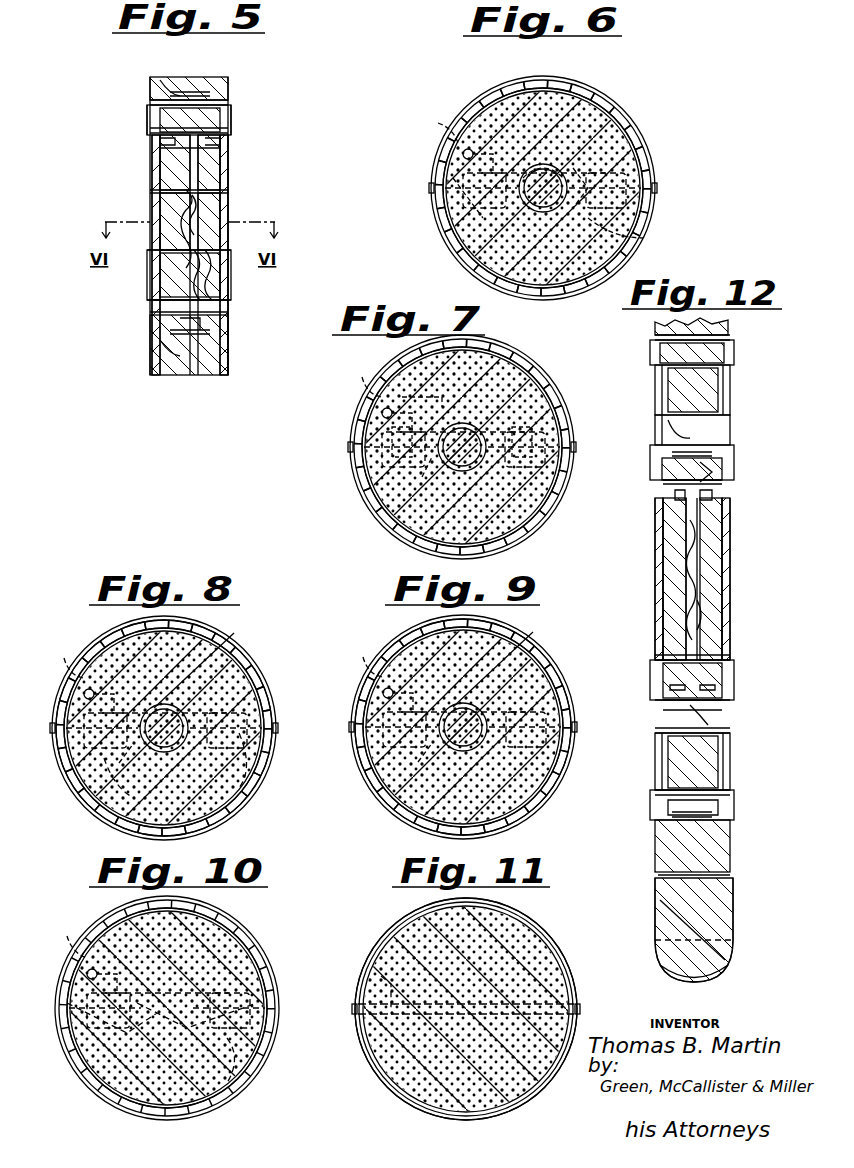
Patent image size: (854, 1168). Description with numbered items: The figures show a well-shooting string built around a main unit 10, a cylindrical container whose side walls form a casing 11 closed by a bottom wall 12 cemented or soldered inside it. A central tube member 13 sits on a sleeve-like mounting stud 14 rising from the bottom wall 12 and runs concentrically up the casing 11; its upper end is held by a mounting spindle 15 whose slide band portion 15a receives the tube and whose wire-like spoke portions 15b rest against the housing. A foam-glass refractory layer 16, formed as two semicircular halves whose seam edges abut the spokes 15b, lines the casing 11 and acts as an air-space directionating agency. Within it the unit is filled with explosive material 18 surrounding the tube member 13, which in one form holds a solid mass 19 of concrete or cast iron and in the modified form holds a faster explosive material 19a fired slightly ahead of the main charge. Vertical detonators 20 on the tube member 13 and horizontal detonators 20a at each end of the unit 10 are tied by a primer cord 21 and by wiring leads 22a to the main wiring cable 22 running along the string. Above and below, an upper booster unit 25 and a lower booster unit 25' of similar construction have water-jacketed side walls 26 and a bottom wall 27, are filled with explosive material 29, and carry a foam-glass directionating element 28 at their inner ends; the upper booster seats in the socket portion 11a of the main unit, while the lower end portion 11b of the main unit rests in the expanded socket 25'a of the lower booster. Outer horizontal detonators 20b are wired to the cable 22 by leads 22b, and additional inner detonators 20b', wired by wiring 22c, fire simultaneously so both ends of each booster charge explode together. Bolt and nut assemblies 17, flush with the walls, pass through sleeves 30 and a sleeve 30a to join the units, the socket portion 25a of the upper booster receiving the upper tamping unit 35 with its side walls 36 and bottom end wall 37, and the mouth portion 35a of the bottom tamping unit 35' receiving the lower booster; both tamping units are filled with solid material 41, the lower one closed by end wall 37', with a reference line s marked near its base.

In FIG. 5, the main unit 10 is at (228, 152).
In FIG. 6, the main unit 10 is at (543, 176).
In FIG. 8, the main unit 10 is at (159, 728).
In FIG. 9, the main unit 10 is at (447, 727).
In FIG. 12, the main unit 10 is at (730, 584).
In FIG. 8, the casing 11 is at (163, 732).
In FIG. 9, the casing 11 is at (481, 727).
In FIG. 5, the socket portion 11a is at (231, 112).
In FIG. 7, the socket portion 11a is at (471, 447).
In FIG. 5, the lower end portion 11b is at (152, 292).
In FIG. 5, the bottom wall 12 is at (160, 314).
In FIG. 12, the bottom wall 12 is at (668, 722).
In FIG. 5, the tube member 13 is at (190, 226).
In FIG. 6, the tube member 13 is at (563, 132).
In FIG. 7, the tube member 13 is at (494, 402).
In FIG. 8, the tube member 13 is at (194, 681).
In FIG. 9, the tube member 13 is at (492, 680).
In FIG. 12, the tube member 13 is at (698, 516).
In FIG. 5, the mounting stud 14 is at (236, 252).
In FIG. 12, the mounting stud 14 is at (715, 715).
In FIG. 5, the mounting spindle 15 is at (172, 148).
In FIG. 7, the slide band portion 15a is at (391, 372).
In FIG. 12, the slide band portion 15a is at (678, 505).
In FIG. 5, the spoke portions 15b is at (160, 132).
In FIG. 7, the spoke portions 15b is at (461, 425).
In FIG. 12, the spoke portions 15b is at (655, 420).
In FIG. 5, the refractory layer 16 is at (162, 180).
In FIG. 6, the refractory layer 16 is at (518, 188).
In FIG. 8, the refractory layer 16 is at (179, 728).
In FIG. 9, the refractory layer 16 is at (480, 727).
In FIG. 12, the refractory layer 16 is at (725, 542).
In FIG. 5, the bolt and nut assemblies 17 is at (231, 118).
In FIG. 6, the bolt and nut assemblies 17 is at (546, 175).
In FIG. 7, the bolt and nut assemblies 17 is at (456, 444).
In FIG. 8, the bolt and nut assemblies 17 is at (162, 725).
In FIG. 9, the bolt and nut assemblies 17 is at (460, 724).
In FIG. 11, the bolt and nut assemblies 17 is at (456, 1008).
In FIG. 12, the bolt and nut assemblies 17 is at (652, 345).
In FIG. 5, the explosive material 18 is at (185, 160).
In FIG. 6, the explosive material 18 is at (543, 168).
In FIG. 8, the explosive material 18 is at (142, 728).
In FIG. 9, the explosive material 18 is at (463, 718).
In FIG. 12, the explosive material 18 is at (710, 642).
In FIG. 7, the solid mass material 19 is at (451, 451).
In FIG. 8, the solid mass material 19 is at (212, 666).
In FIG. 9, the solid mass material 19 is at (514, 668).
In FIG. 5, the explosive material 19a is at (200, 198).
In FIG. 6, the explosive material 19a is at (593, 124).
In FIG. 8, the vertical detonators 20 is at (157, 755).
In FIG. 7, the horizontal detonators 20a is at (444, 435).
In FIG. 9, the horizontal detonators 20a is at (464, 746).
In FIG. 12, the horizontal detonators 20a is at (680, 512).
In FIG. 6, the horizontal detonators 20b is at (430, 199).
In FIG. 10, the horizontal detonators 20b is at (160, 1038).
In FIG. 12, the horizontal detonators 20b is at (653, 844).
In FIG. 5, the horizontal detonators 20b' is at (182, 197).
In FIG. 6, the horizontal detonators 20b' is at (542, 184).
In FIG. 12, the horizontal detonators 20b' is at (690, 440).
In FIG. 5, the primer cord 21 is at (200, 215).
In FIG. 6, the primer cord 21 is at (635, 203).
In FIG. 7, the primer cord 21 is at (372, 489).
In FIG. 8, the primer cord 21 is at (81, 780).
In FIG. 9, the primer cord 21 is at (384, 780).
In FIG. 12, the primer cord 21 is at (690, 588).
In FIG. 5, the wiring cable 22 is at (188, 200).
In FIG. 6, the wiring cable 22 is at (443, 143).
In FIG. 7, the wiring cable 22 is at (346, 409).
In FIG. 8, the wiring cable 22 is at (64, 707).
In FIG. 9, the wiring cable 22 is at (364, 700).
In FIG. 10, the wiring cable 22 is at (68, 984).
In FIG. 12, the wiring cable 22 is at (680, 555).
In FIG. 7, the wiring leads 22a is at (358, 385).
In FIG. 8, the wiring leads 22a is at (49, 682).
In FIG. 9, the wiring leads 22a is at (353, 663).
In FIG. 10, the wiring leads 22b is at (53, 946).
In FIG. 12, the wiring leads 22b is at (710, 805).
In FIG. 5, the wiring 22c is at (160, 70).
In FIG. 6, the wiring 22c is at (429, 106).
In FIG. 12, the wiring 22c is at (668, 438).
In FIG. 5, the upper booster unit 25 is at (211, 100).
In FIG. 7, the upper booster unit 25 is at (469, 447).
In FIG. 12, the upper booster unit 25 is at (712, 390).
In FIG. 5, the lower booster unit 25' is at (212, 345).
In FIG. 10, the lower booster unit 25' is at (167, 1008).
In FIG. 12, the lower booster unit 25' is at (721, 762).
In FIG. 11, the socket portion 25a is at (449, 1009).
In FIG. 5, the socket 25'a is at (222, 278).
In FIG. 6, the socket 25'a is at (571, 188).
In FIG. 8, the socket 25'a is at (179, 728).
In FIG. 9, the socket 25'a is at (482, 727).
In FIG. 7, the water-jacketed side walls 26 is at (474, 447).
In FIG. 10, the water-jacketed side walls 26 is at (152, 1009).
In FIG. 5, the bottom wall 27 is at (225, 120).
In FIG. 12, the bottom wall 27 is at (665, 478).
In FIG. 5, the directionating element 28 is at (220, 312).
In FIG. 12, the directionating element 28 is at (706, 470).
In FIG. 5, the explosive material 29 is at (172, 80).
In FIG. 10, the explosive material 29 is at (174, 1010).
In FIG. 12, the explosive material 29 is at (695, 385).
In FIG. 5, the sleeves 30 is at (228, 100).
In FIG. 12, the sleeves 30 is at (660, 775).
In FIG. 11, the sleeve 30a is at (348, 981).
In FIG. 12, the sleeve 30a is at (660, 328).
In FIG. 11, the upper tamping unit 35 is at (466, 1007).
In FIG. 12, the upper tamping unit 35 is at (713, 329).
In FIG. 12, the bottom tamping unit 35' is at (716, 930).
In FIG. 12, the mouth portion 35a is at (733, 845).
In FIG. 12, the side walls 36 is at (655, 918).
In FIG. 12, the bottom end wall 37 is at (716, 354).
In FIG. 12, the end cap 37' is at (720, 978).
In FIG. 11, the solid mass material 41 is at (466, 1005).
In FIG. 12, the solid mass material 41 is at (705, 915).
In FIG. 12, the seam s is at (733, 938).